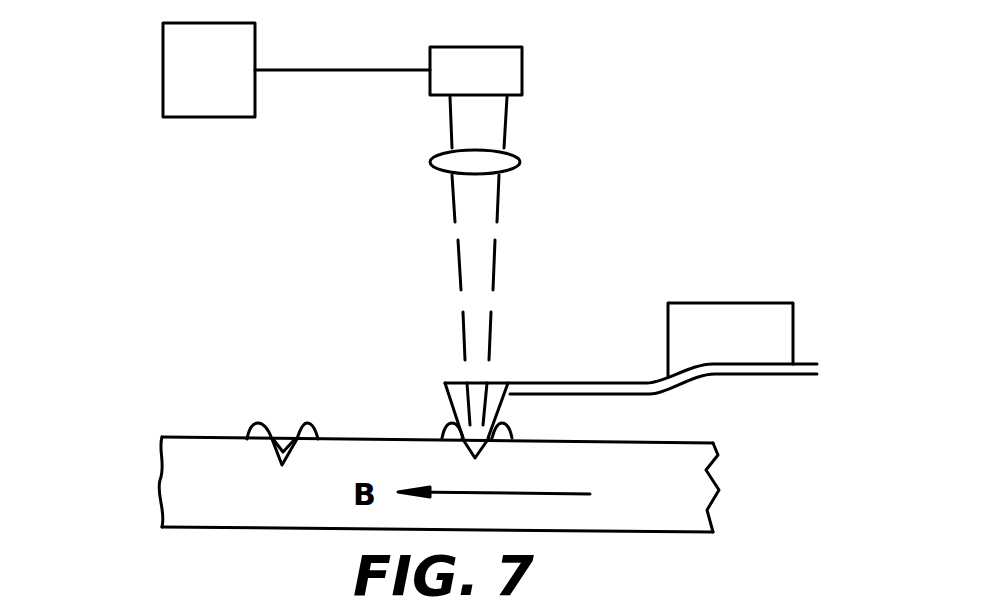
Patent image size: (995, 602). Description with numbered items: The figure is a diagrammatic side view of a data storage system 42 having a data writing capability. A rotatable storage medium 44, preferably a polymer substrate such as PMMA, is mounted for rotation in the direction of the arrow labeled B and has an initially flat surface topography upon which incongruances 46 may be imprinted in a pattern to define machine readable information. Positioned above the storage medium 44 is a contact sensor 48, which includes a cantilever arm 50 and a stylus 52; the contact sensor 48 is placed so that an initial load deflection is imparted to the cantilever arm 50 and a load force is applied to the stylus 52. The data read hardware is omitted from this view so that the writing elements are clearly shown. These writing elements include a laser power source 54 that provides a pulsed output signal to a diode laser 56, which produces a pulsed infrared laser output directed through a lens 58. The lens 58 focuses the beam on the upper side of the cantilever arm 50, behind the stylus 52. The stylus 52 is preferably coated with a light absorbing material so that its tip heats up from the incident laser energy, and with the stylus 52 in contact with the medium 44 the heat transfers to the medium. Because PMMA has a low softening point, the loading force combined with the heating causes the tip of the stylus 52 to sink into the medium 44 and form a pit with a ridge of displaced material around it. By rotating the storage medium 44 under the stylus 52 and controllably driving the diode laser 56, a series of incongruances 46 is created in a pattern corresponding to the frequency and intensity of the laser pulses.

The data storage system 42 is at (180, 370).
The storage medium 44 is at (725, 467).
The incongruances 46 is at (278, 430).
The contact sensor 48 is at (727, 310).
The cantilever arm 50 is at (588, 383).
The stylus 52 is at (477, 423).
The laser power source 54 is at (210, 117).
The diode laser 56 is at (522, 75).
The lens 58 is at (510, 162).